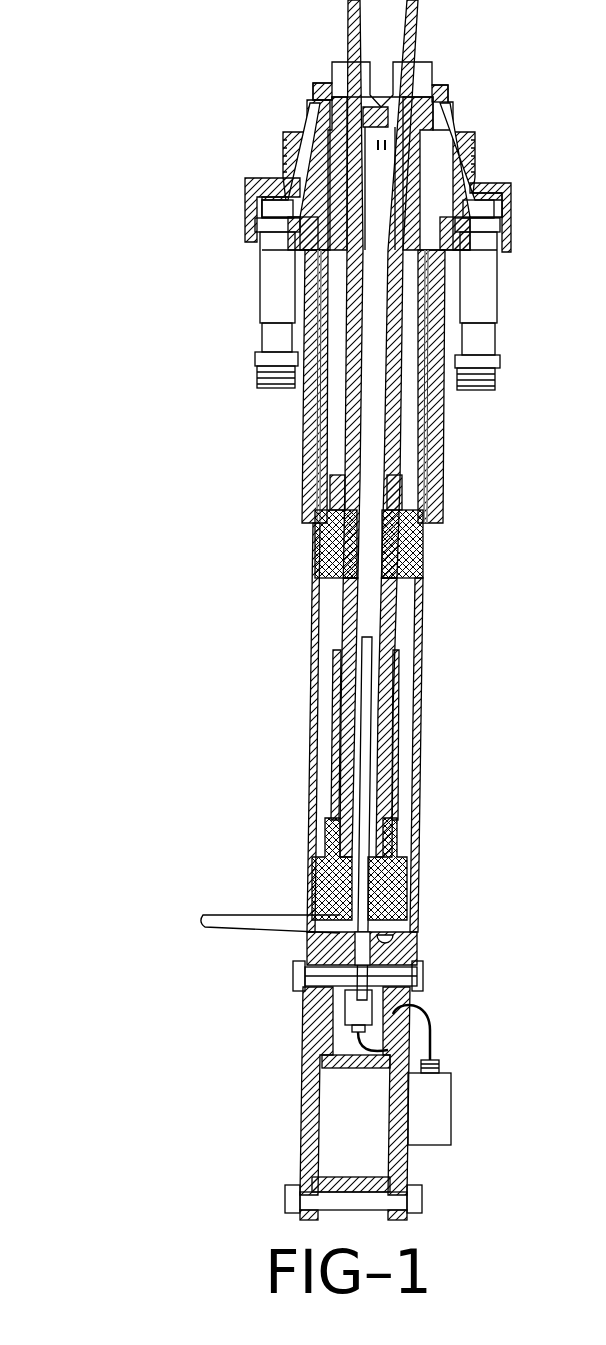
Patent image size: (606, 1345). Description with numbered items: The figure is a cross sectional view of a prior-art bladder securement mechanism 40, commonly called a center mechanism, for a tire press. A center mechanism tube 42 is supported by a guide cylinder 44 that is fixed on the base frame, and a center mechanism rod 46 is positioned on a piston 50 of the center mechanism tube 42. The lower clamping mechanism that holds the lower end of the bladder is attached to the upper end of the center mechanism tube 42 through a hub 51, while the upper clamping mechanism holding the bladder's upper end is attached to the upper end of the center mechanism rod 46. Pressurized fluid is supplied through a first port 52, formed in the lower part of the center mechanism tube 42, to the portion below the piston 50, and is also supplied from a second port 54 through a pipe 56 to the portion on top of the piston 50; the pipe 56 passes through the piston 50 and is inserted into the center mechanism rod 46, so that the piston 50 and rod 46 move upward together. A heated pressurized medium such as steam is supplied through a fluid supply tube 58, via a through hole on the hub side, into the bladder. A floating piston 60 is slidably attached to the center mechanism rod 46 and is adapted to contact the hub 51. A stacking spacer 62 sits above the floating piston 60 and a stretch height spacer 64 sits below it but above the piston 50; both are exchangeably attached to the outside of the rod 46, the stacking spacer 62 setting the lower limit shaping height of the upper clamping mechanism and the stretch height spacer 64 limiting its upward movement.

The bladder securement mechanism 40 is at (150, 478).
The center mechanism tube 42 is at (312, 697).
The guide cylinder 44 is at (305, 441).
The center mechanism rod 46 is at (343, 790).
The piston 50 is at (330, 877).
The hub 51 is at (298, 128).
The first port 52 is at (248, 923).
The second port 54 is at (421, 973).
The pipe 56 is at (362, 790).
The fluid supply tube 58 is at (478, 288).
The floating piston 60 is at (327, 548).
The stacking spacer 62 is at (417, 22).
The stretch height spacer 64 is at (391, 692).